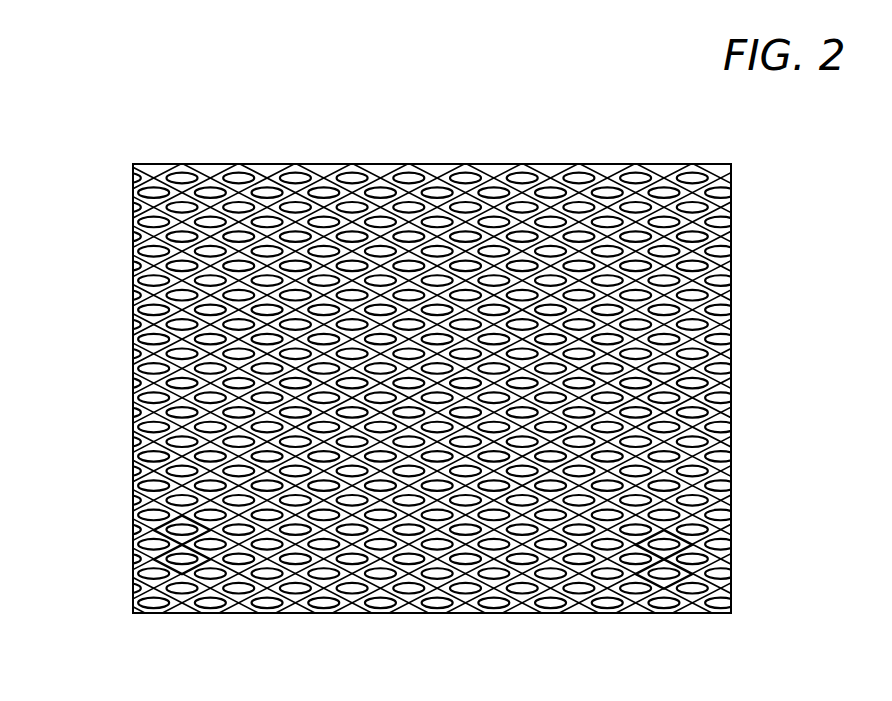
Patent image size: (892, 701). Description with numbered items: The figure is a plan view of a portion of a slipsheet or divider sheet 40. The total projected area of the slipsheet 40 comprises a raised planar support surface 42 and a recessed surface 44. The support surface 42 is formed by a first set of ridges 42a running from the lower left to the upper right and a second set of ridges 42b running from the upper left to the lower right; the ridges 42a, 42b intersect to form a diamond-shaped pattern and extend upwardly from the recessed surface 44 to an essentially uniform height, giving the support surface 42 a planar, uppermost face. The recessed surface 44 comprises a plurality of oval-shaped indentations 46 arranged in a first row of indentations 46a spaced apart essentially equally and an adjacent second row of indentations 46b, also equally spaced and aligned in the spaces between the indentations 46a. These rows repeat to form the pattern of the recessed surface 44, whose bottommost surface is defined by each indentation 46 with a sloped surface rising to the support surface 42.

The slipsheet or divider sheet 40 is at (100, 200).
The raised planar support surface 42 is at (333, 165).
The first set of ridges 42a is at (610, 165).
The second set of ridges 42b is at (541, 165).
The recessed surface 44 is at (413, 165).
The oval-shaped indentations 46 is at (480, 165).
The first row of indentations 46a is at (132, 565).
The second row of indentations 46b is at (132, 523).